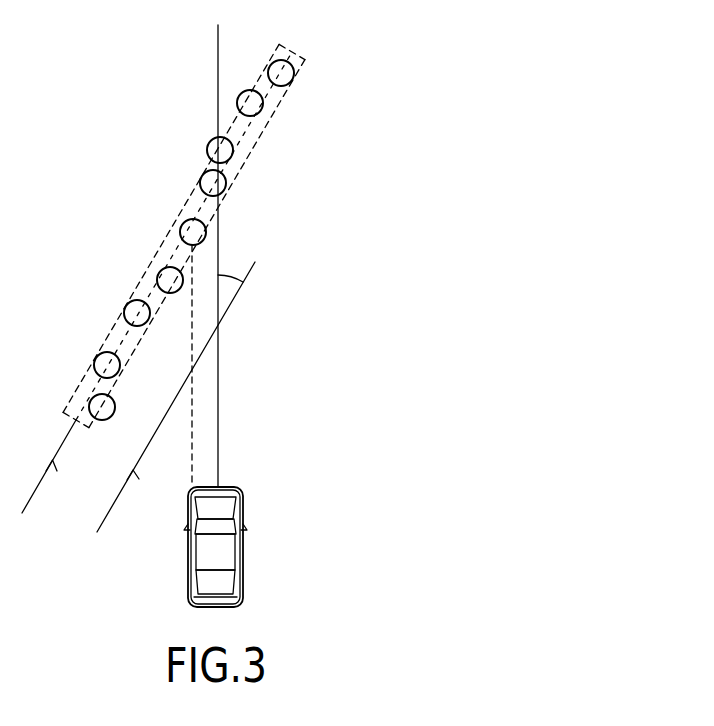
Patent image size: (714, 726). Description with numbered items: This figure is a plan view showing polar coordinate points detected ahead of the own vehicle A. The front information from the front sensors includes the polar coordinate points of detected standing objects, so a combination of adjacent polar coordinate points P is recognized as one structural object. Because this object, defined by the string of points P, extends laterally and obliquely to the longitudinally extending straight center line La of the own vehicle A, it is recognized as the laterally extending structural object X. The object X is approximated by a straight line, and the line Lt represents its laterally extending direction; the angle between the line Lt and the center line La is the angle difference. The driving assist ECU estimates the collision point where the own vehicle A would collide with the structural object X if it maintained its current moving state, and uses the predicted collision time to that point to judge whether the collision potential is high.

The polar coordinate point P is at (295, 73).
The laterally extending structural object X is at (175, 222).
The longitudinally extending straight center line La is at (218, 422).
The line representing laterally extending direction Lt is at (117, 498).
The own vehicle A is at (243, 548).